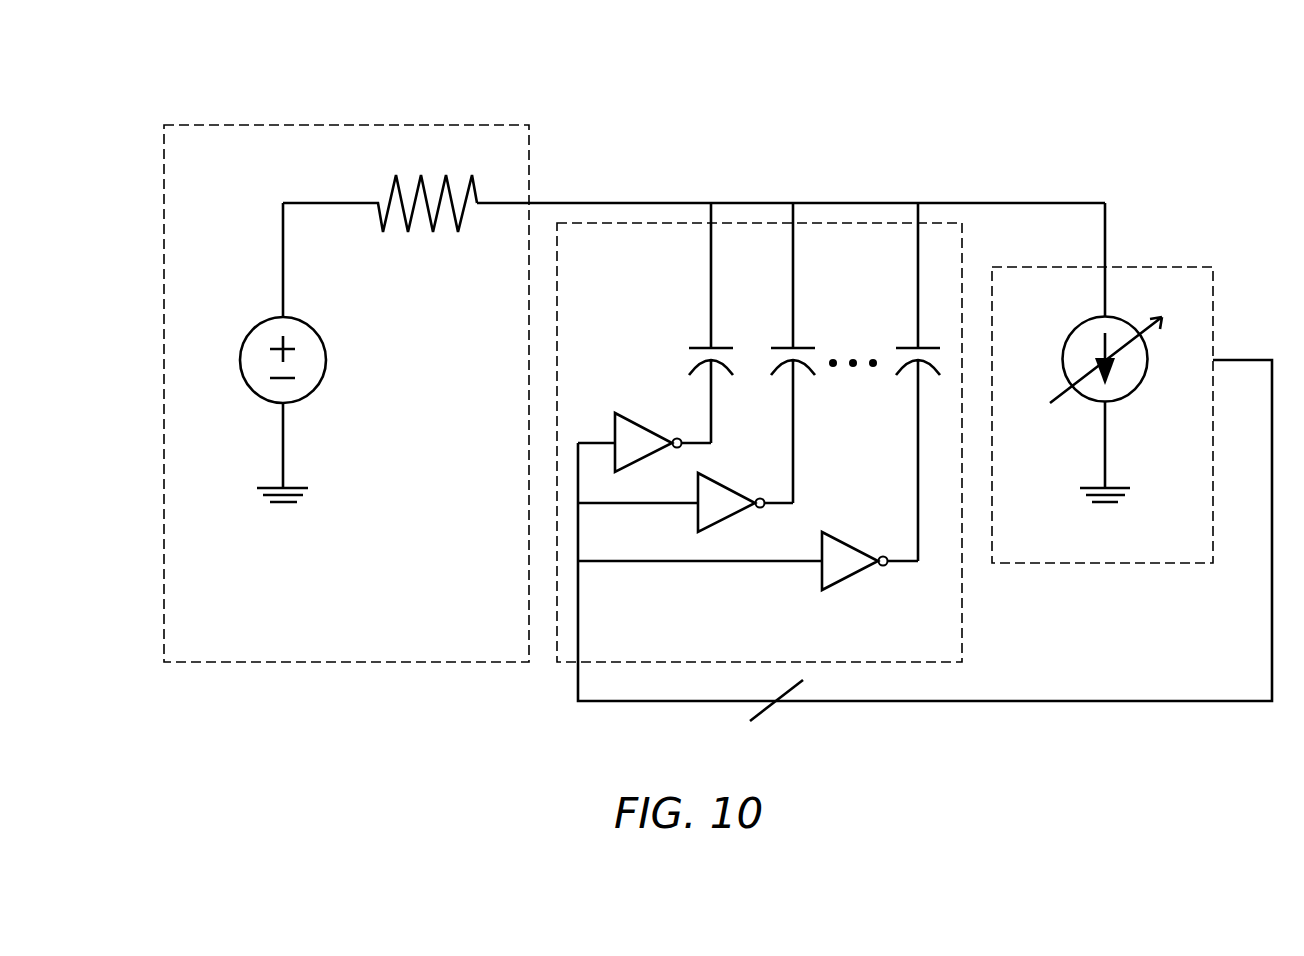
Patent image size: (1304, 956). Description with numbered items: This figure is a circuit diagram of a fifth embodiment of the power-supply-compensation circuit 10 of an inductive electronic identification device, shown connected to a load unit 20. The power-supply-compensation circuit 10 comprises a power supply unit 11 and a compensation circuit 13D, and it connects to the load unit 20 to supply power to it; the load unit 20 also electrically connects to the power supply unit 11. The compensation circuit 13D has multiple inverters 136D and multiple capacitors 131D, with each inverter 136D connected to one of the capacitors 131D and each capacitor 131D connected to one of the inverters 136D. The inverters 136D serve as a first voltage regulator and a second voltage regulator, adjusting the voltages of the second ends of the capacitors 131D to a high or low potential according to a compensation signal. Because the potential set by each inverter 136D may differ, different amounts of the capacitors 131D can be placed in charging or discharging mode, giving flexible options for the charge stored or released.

The power-supply-compensation circuit 10 is at (629, 188).
The power supply unit 11 is at (233, 109).
The compensation circuit 13D is at (626, 679).
The capacitor 131D is at (731, 333).
The inverter 136D is at (607, 390).
The load unit 20 is at (1184, 245).